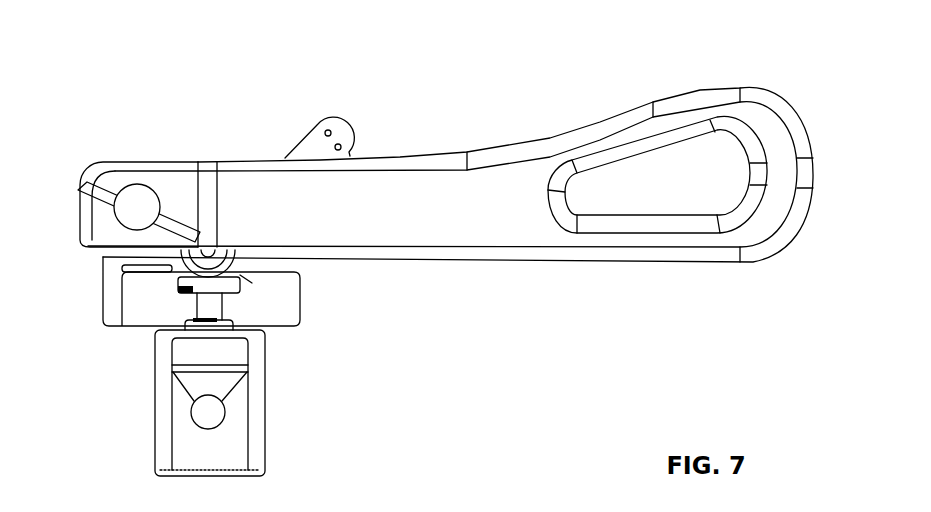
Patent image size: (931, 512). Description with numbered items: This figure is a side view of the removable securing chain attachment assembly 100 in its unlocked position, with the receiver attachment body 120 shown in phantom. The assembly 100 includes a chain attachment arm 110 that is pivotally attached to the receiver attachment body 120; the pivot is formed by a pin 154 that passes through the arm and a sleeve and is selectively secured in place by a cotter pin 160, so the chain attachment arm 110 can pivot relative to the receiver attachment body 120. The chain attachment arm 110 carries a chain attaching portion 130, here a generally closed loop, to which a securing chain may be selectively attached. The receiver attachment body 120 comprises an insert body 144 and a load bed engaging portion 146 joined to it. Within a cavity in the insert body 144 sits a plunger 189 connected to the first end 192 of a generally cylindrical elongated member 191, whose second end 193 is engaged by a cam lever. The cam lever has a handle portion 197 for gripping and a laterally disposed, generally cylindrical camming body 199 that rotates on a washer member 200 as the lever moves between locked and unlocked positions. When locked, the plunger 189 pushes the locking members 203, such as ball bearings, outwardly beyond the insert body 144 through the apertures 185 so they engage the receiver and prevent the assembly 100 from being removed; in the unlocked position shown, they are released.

The removable securing chain attachment assembly 100 is at (311, 52).
The chain attachment arm 110 is at (635, 114).
The receiver attachment body 120 is at (348, 422).
The chain attaching portion 130 is at (737, 128).
The insert body 144 is at (266, 383).
The load bed engaging portion 146 is at (285, 283).
The pin 154 is at (142, 190).
The cotter pin 160 is at (82, 183).
The apertures 185 is at (223, 424).
The plunger 189 is at (227, 383).
The elongated member 191 is at (213, 308).
The first end 192 is at (215, 320).
The second end 193 is at (217, 282).
The handle portion 197 is at (334, 118).
The camming body 199 is at (207, 289).
The washer member 200 is at (250, 275).
The locking members 203 is at (196, 418).